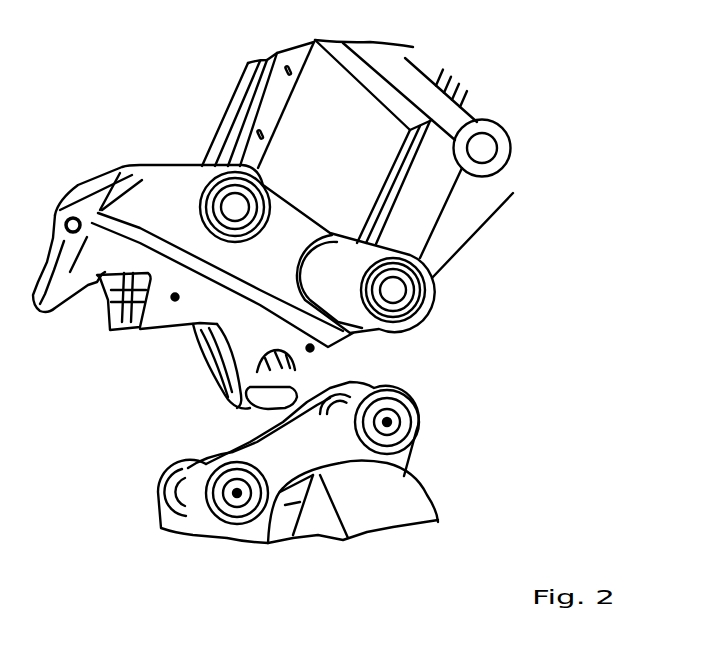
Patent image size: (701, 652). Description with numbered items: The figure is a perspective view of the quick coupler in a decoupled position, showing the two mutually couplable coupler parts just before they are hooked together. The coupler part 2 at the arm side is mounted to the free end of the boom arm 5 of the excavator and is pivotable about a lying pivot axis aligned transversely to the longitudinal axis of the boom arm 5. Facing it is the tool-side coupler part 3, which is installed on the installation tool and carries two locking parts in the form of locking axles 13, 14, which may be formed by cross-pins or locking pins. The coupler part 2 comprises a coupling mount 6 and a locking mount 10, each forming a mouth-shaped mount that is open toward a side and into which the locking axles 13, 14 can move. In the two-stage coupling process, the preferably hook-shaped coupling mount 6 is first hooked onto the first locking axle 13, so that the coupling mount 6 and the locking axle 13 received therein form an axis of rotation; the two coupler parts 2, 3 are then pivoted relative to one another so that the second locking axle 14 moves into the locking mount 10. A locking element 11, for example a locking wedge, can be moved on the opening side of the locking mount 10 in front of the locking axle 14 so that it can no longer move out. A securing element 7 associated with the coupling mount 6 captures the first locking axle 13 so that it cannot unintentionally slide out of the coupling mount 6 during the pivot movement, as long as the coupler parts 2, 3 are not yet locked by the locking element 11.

The coupler part at the arm side 2 is at (292, 206).
The tool-side coupler part 3 is at (440, 502).
The boom arm 5 is at (477, 197).
The coupling mount 6 is at (291, 382).
The securing element 7 is at (250, 381).
The locking mount 10 is at (101, 302).
The locking element 11 is at (117, 332).
The first locking axle 13 is at (387, 422).
The second locking axle 14 is at (237, 493).